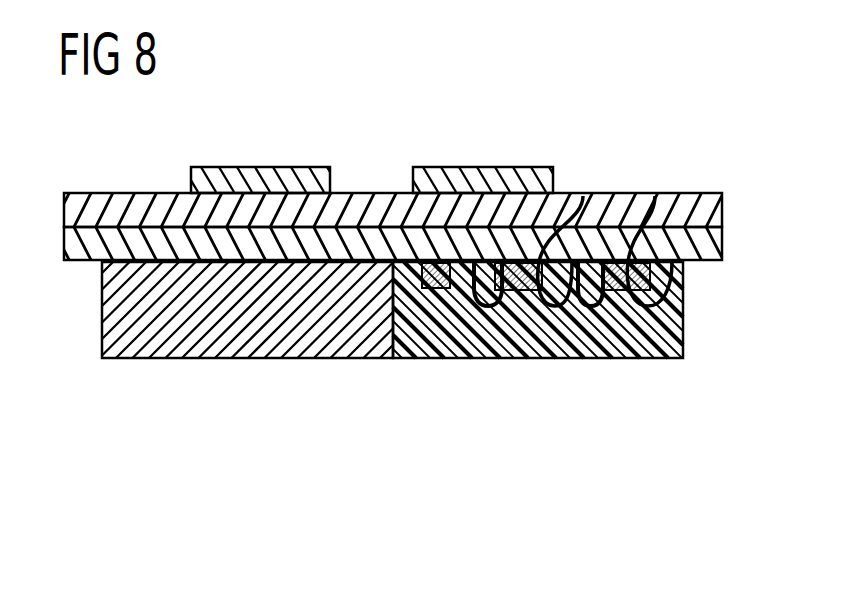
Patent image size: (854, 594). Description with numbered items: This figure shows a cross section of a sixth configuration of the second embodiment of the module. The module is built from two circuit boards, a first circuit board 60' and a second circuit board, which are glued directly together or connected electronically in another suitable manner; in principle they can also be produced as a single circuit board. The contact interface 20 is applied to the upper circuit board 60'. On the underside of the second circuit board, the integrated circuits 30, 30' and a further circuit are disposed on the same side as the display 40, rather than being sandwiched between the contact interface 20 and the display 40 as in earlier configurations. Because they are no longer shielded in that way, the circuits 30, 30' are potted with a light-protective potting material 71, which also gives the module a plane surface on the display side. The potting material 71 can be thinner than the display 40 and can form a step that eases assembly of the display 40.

The contact interface 20 is at (413, 182).
The integrated circuit 30 is at (649, 225).
The integrated circuit 30' is at (571, 225).
The display 40 is at (242, 347).
The circuit board 60' is at (398, 173).
The light-protective potting material 71 is at (540, 347).